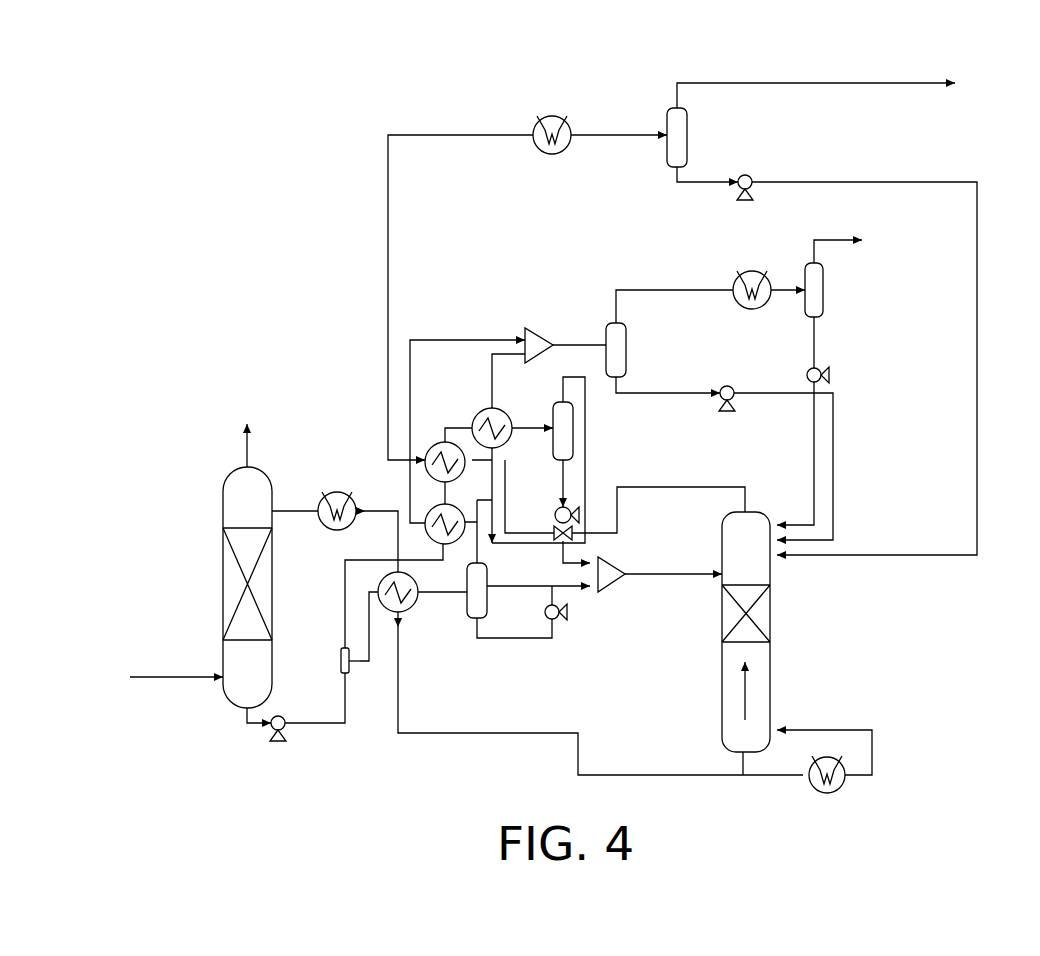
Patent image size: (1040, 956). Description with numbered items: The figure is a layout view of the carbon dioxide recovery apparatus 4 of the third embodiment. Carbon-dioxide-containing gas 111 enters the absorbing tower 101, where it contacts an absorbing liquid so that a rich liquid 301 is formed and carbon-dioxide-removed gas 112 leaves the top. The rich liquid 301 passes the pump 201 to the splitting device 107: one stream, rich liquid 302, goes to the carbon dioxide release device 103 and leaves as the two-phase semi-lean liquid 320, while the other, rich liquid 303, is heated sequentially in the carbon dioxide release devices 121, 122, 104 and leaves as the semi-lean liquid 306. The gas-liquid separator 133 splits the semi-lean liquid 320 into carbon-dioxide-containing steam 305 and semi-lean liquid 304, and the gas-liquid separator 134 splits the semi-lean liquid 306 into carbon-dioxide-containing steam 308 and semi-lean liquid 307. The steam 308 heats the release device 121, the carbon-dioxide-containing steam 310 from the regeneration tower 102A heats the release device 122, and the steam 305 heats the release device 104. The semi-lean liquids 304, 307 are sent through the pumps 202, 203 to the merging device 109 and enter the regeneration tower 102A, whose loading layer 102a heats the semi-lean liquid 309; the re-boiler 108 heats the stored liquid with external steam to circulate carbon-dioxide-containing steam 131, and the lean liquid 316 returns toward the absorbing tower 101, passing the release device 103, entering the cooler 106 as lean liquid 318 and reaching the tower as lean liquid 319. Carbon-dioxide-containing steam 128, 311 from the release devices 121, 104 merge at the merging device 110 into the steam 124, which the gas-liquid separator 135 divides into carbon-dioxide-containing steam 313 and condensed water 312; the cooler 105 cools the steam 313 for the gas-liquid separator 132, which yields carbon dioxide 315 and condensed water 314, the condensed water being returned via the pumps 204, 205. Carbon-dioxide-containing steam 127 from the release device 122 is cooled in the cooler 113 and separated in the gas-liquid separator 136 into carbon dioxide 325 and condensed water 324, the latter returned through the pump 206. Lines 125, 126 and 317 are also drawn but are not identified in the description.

The carbon dioxide recovery apparatus 4 is at (272, 353).
The absorbing tower 101 is at (223, 517).
The loading layer 102a is at (762, 608).
The regeneration tower 102A is at (771, 648).
The carbon dioxide release device 103 is at (404, 612).
The carbon dioxide release device 104 is at (482, 410).
The cooler 105 is at (748, 271).
The cooler 106 is at (337, 492).
The splitting device 107 is at (341, 660).
The re-boiler 108 is at (810, 786).
The merging device 109 is at (610, 592).
The merging device 110 is at (538, 328).
The carbon-dioxide-containing gas 111 is at (155, 681).
The carbon-dioxide-removed gas 112 is at (243, 437).
The cooler 113 is at (547, 116).
The carbon dioxide release device 121 is at (428, 512).
The carbon dioxide release device 122 is at (430, 448).
The carbon-dioxide-containing steam 124 is at (580, 345).
The line to heat exchanger 125 is at (408, 446).
The line from heat exchanger 126 is at (437, 425).
The carbon-dioxide-containing steam 127 is at (388, 170).
The carbon-dioxide-containing steam 128 is at (450, 340).
The carbon-dioxide-containing steam 131 is at (750, 692).
The gas-liquid separator 132 is at (824, 280).
The gas-liquid separator 133 is at (488, 580).
The gas-liquid separator 134 is at (574, 445).
The gas-liquid separator 135 is at (614, 322).
The gas-liquid separator 136 is at (688, 125).
The pump 201 is at (281, 742).
The pump 202 is at (558, 624).
The pump 203 is at (573, 509).
The pump 204 is at (730, 412).
The pump 205 is at (826, 381).
The pump 206 is at (752, 176).
The rich liquid 301 is at (267, 725).
The rich liquid 302 is at (365, 668).
The rich liquid 303 is at (345, 612).
The semi-lean liquid 304 is at (525, 640).
The carbon-dioxide-containing steam 305 is at (480, 548).
The semi-lean liquid 306 is at (540, 425).
The semi-lean liquid 307 is at (550, 468).
The carbon-dioxide-containing steam 308 is at (573, 422).
The semi-lean liquid 309 is at (685, 576).
The carbon-dioxide-containing steam 310 is at (618, 512).
The carbon-dioxide-containing steam 311 is at (505, 338).
The condensed water 312 is at (685, 393).
The carbon-dioxide-containing steam 313 is at (652, 289).
The condensed water 314 is at (815, 345).
The carbon dioxide 315 is at (837, 240).
The lean liquid 316 is at (690, 773).
The reboiler return line 317 is at (860, 729).
The lean liquid 318 is at (360, 513).
The lean liquid 319 is at (302, 505).
The semi-lean liquid 320 is at (450, 594).
The condensed water 324 is at (708, 181).
The carbon dioxide 325 is at (835, 83).